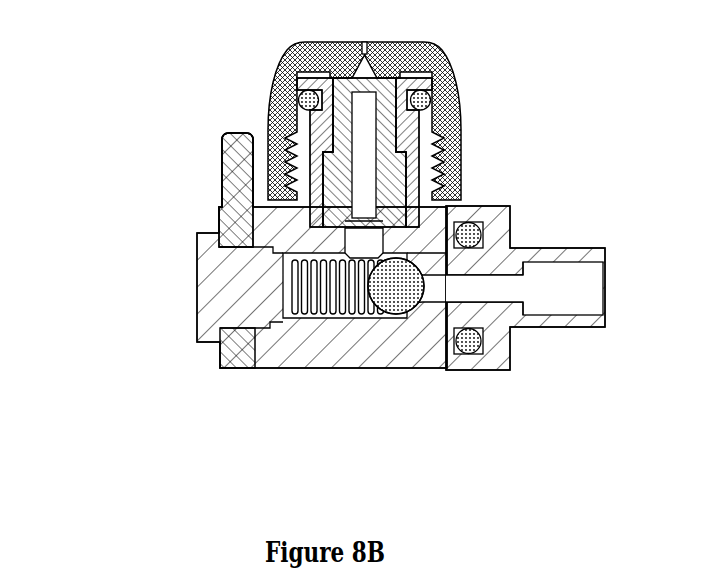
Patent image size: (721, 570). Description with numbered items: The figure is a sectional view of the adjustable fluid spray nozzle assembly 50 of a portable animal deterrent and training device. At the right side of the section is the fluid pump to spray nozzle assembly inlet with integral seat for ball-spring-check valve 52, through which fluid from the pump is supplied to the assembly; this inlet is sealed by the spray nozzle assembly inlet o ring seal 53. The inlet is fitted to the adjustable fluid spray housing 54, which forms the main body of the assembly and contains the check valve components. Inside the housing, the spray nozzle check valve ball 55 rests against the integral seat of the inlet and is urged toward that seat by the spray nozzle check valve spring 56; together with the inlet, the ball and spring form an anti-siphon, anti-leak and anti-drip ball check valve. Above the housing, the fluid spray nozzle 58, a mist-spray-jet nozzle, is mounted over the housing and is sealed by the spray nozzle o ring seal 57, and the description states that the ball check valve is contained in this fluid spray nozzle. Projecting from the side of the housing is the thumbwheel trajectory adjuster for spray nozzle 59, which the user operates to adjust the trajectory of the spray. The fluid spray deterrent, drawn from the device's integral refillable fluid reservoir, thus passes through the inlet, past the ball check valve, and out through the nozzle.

The adjustable fluid spray nozzle assembly 50 is at (130, 202).
The fluid pump to spray nozzle assembly inlet with integral seat for ball-spring-che 52 is at (508, 262).
The spray nozzle assembly inlet o ring seal 53 is at (473, 345).
The adjustable fluid spray housing 54 is at (427, 345).
The spray nozzle check valve ball 55 is at (392, 313).
The spray nozzle check valve spring 56 is at (323, 313).
The spray nozzle o ring seal 57 is at (297, 100).
The fluid spray nozzle 58 is at (453, 93).
The thumbwheel trajectory adjuster for spray nozzle 59 is at (238, 133).